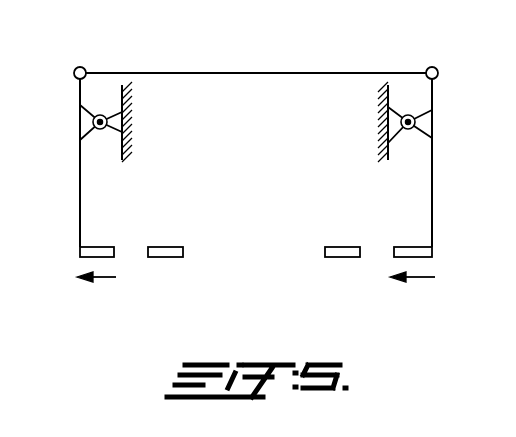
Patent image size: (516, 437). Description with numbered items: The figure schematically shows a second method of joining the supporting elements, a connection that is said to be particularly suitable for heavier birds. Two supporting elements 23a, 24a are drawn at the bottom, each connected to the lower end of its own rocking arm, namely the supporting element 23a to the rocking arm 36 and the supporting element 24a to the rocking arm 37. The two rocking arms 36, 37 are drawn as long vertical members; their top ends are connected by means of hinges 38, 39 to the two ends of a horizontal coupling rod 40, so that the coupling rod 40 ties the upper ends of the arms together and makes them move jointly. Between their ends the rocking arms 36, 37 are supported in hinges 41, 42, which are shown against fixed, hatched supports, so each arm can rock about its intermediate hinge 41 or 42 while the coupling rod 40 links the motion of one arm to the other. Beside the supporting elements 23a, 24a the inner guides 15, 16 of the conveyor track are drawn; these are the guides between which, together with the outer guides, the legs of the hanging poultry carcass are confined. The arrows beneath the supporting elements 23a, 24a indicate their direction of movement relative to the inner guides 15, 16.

The inner guide 15 is at (173, 250).
The inner guide 16 is at (340, 250).
The supporting element 23a is at (98, 246).
The supporting element 24a is at (415, 250).
The rocking arm 36 is at (80, 215).
The rocking arm 37 is at (433, 200).
The hinge 38 is at (77, 65).
The hinge 39 is at (434, 65).
The coupling rod 40 is at (247, 72).
The hinge 41 is at (103, 122).
The hinge 42 is at (412, 124).